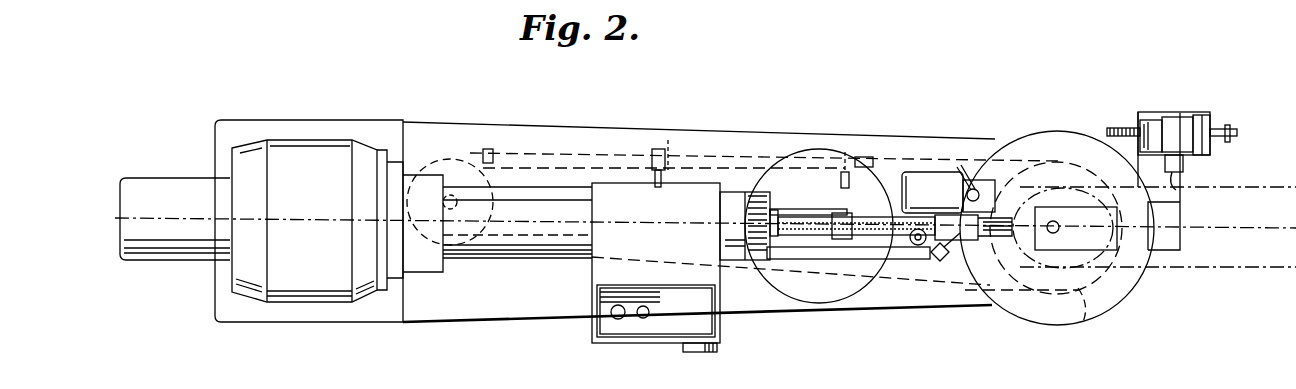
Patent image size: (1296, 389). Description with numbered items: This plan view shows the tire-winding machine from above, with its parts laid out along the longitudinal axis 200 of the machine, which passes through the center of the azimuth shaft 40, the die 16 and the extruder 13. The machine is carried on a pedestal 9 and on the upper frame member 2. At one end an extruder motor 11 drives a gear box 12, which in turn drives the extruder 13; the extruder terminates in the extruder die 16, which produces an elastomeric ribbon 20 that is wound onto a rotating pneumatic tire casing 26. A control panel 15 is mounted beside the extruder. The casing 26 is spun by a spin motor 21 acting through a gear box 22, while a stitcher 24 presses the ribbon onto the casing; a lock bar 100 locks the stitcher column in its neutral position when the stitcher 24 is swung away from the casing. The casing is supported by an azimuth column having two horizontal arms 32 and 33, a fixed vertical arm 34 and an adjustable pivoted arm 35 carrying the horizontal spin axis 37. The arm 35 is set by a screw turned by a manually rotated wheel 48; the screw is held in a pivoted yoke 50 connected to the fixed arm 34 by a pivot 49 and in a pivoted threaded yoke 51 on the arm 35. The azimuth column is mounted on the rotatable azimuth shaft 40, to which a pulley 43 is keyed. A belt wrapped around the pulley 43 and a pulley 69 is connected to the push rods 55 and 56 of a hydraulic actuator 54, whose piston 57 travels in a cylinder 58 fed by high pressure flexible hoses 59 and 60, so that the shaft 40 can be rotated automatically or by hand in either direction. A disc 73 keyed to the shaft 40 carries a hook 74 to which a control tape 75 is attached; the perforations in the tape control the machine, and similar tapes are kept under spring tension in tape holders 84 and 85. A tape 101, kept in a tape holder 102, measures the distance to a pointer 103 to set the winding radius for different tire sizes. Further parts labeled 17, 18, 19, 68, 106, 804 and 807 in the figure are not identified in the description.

The frame member 2 is at (600, 128).
The pedestal 9 is at (374, 122).
The extruder motor 11 is at (173, 172).
The gear box 12 is at (317, 221).
The extruder 13 is at (497, 223).
The control panel 15 is at (655, 340).
The extruder die 16 is at (773, 262).
The nut 17 is at (840, 242).
The guide plate 18 is at (828, 210).
The foot 19 is at (708, 353).
The elastomeric ribbon 20 is at (905, 258).
The spin motor 21 is at (932, 192).
The gear box 22 is at (1003, 165).
The stitcher 24 is at (960, 247).
The tire casing 26 is at (1203, 280).
The horizontal arm 32 is at (1168, 252).
The horizontal arm 33 is at (1142, 162).
The fixed vertical arm 34 is at (1212, 153).
The adjustable pivoted arm 35 is at (1175, 115).
The spin axis 37 is at (1176, 181).
The azimuth shaft 40 is at (1057, 224).
The pulley 43 is at (1081, 318).
The manually rotated wheel 48 is at (1228, 128).
The pivot 49 is at (1196, 157).
The pivoted yoke 50 is at (1215, 123).
The pivoted threaded yoke 51 is at (1150, 124).
The hydraulic actuator 54 is at (719, 153).
The push rod 55 is at (551, 168).
The push rod 56 is at (866, 156).
The piston 57 is at (668, 140).
The cylinder 58 is at (775, 153).
The high pressure flexible hose 59 is at (838, 181).
The high pressure flexible hose 60 is at (655, 183).
The line 68 is at (932, 160).
The pulley 69 is at (448, 169).
The disc 73 is at (1112, 300).
The hook 74 is at (1170, 204).
The control tape 75 is at (946, 260).
The tape holder 84 is at (592, 385).
The tape holder 85 is at (544, 385).
The lock bar 100 is at (971, 172).
The tape 101 is at (833, 250).
The tape holder 102 is at (770, 266).
The pointer 103 is at (920, 262).
The guide line 106 is at (730, 268).
The longitudinal axis 200 is at (1212, 236).
The knob 804 is at (615, 316).
The knob 807 is at (650, 313).